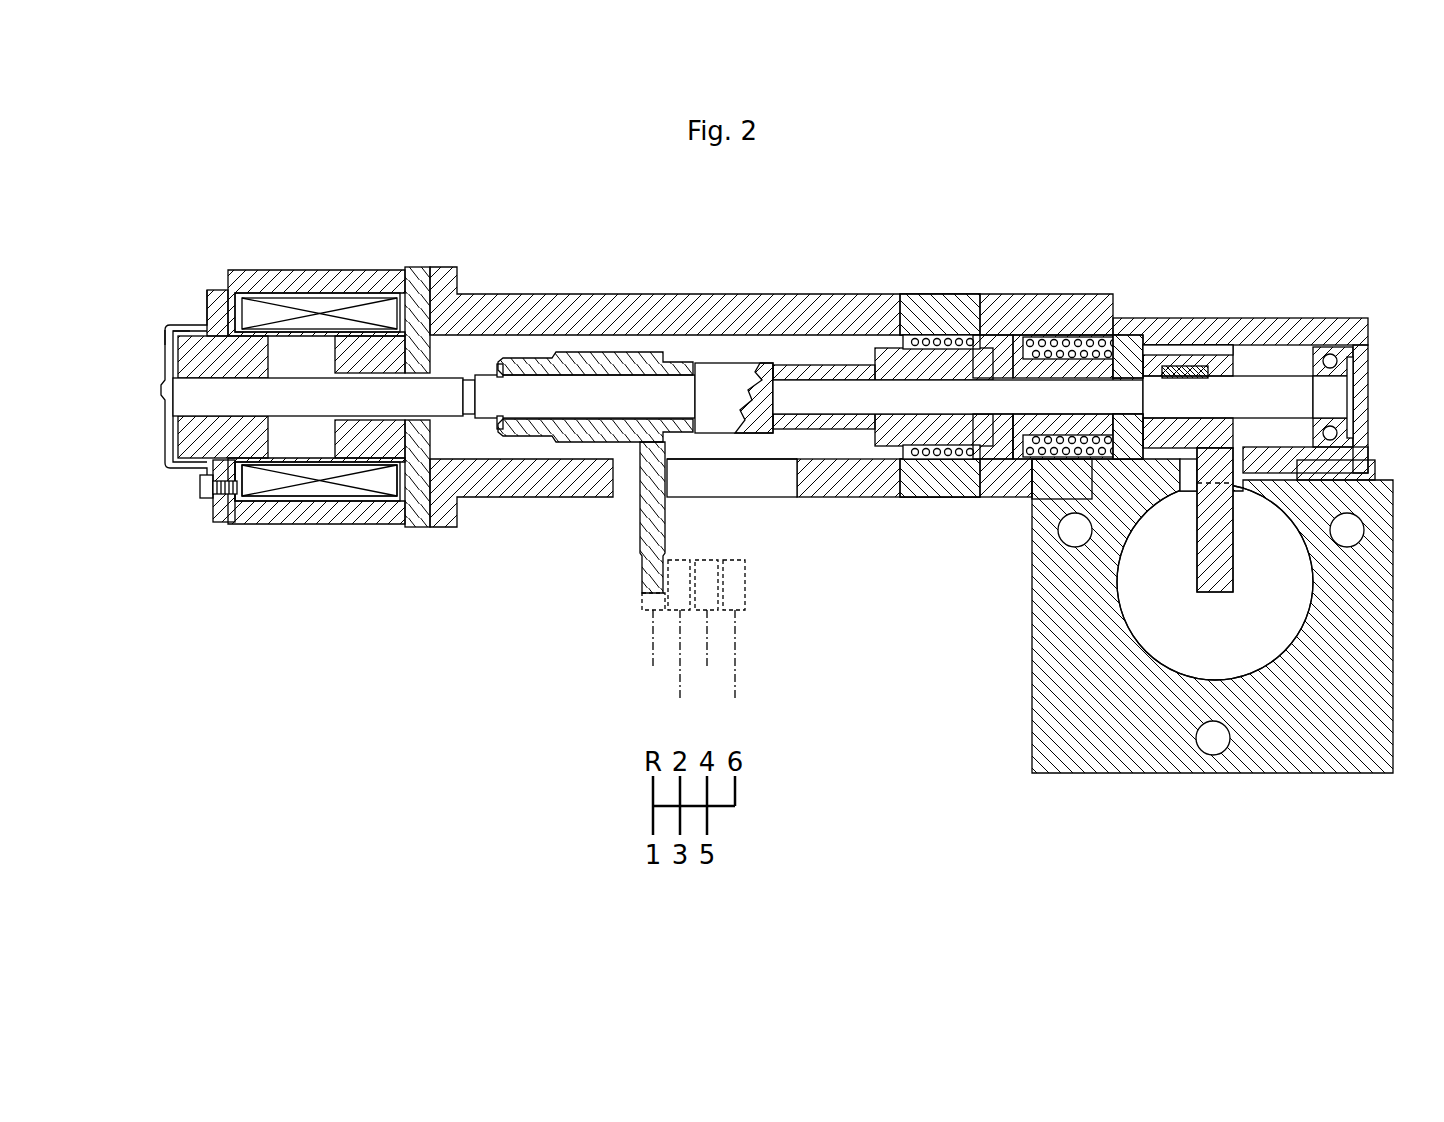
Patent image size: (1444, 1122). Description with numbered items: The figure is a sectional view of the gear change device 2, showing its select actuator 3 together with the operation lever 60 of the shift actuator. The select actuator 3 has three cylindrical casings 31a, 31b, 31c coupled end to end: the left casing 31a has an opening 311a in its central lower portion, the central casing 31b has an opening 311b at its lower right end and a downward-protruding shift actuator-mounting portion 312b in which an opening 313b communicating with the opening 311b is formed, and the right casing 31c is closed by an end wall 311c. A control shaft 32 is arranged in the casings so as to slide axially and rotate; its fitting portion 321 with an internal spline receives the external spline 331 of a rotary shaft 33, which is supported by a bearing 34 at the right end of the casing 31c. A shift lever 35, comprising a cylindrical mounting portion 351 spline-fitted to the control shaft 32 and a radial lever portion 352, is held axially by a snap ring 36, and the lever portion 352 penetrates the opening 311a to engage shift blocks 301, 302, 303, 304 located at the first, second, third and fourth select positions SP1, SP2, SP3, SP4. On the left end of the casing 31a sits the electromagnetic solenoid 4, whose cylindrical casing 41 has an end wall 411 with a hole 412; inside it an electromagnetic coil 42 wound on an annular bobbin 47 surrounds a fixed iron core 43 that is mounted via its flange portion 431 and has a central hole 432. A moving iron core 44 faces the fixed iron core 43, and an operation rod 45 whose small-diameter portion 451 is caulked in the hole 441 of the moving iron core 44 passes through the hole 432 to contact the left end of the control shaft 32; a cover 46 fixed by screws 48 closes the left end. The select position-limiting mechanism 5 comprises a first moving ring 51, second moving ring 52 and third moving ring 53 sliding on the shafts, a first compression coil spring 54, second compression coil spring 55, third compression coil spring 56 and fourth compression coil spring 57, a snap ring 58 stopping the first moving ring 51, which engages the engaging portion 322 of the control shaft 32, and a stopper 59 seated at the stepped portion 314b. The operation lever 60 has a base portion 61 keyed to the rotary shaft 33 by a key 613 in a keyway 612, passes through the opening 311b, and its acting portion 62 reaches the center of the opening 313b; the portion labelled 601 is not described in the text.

The gear change device 2 is at (990, 240).
The select actuator 3 is at (662, 263).
The electromagnetic solenoid 4 is at (305, 248).
The cylindrical casing 41 is at (287, 270).
The end wall 411 is at (222, 292).
The hole 412 is at (212, 452).
The electromagnetic coil 42 is at (346, 298).
The fixed iron core 43 is at (361, 450).
The flange portion 431 is at (415, 290).
The hole 432 is at (396, 472).
The moving iron core 44 is at (212, 370).
The hole 441 is at (172, 327).
The operation rod 45 is at (316, 405).
The small-diameter portion 451 is at (186, 330).
The cover 46 is at (153, 410).
The annular bobbin 47 is at (289, 474).
The screws 48 is at (205, 500).
The casing 31a is at (770, 294).
The central casing 31b is at (1078, 294).
The casing 31c is at (1290, 320).
The opening 311a is at (768, 492).
The opening 311b is at (1372, 468).
The end wall 311c is at (1372, 380).
The shift actuator-mounting portion 312b is at (1355, 753).
The opening 313b is at (1245, 668).
The stepped portion 314b is at (1147, 366).
The control shaft 32 is at (722, 372).
The fitting portion 321 is at (838, 368).
The engaging portion 322 is at (900, 446).
The rotary shaft 33 is at (1257, 395).
The external spline 331 is at (890, 368).
The bearing 34 is at (1333, 353).
The shift lever 35 is at (682, 515).
The mounting portion 351 is at (611, 355).
The lever portion 352 is at (640, 524).
The snap ring 36 is at (497, 364).
The select position-limiting mechanism 5 is at (1045, 298).
The first moving ring 51 is at (945, 303).
The second moving ring 52 is at (1010, 338).
The third moving ring 53 is at (1092, 336).
The first compression coil spring 54 is at (940, 442).
The second compression coil spring 55 is at (1023, 456).
The third compression coil spring 56 is at (1052, 448).
The fourth compression coil spring 57 is at (1130, 503).
The snap ring 58 is at (910, 338).
The stopper 59 is at (1131, 338).
The operation lever 60 is at (1241, 562).
The engagement portion 601 is at (1183, 498).
The base portion 61 is at (1165, 348).
The keyway 612 is at (1215, 368).
The key 613 is at (1190, 366).
The acting portion 62 is at (1213, 594).
The shift block 301 is at (643, 598).
The shift block 302 is at (670, 606).
The shift block 303 is at (720, 586).
The shift block 304 is at (746, 600).
The first select position SP1 is at (648, 653).
The second select position SP2 is at (681, 670).
The third select position SP3 is at (707, 652).
The fourth select position SP4 is at (752, 670).